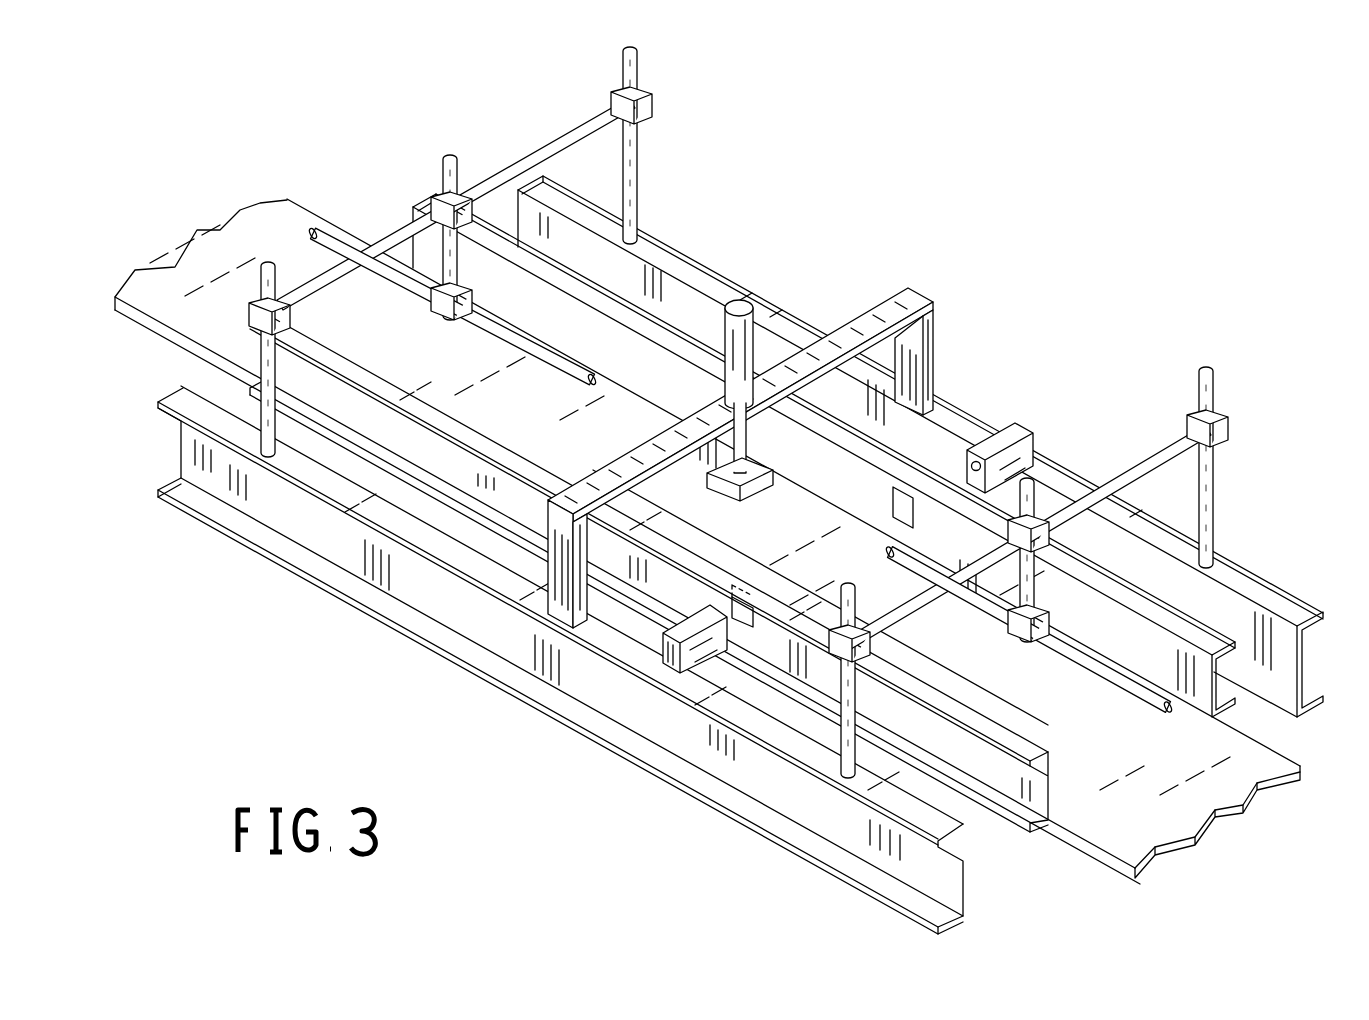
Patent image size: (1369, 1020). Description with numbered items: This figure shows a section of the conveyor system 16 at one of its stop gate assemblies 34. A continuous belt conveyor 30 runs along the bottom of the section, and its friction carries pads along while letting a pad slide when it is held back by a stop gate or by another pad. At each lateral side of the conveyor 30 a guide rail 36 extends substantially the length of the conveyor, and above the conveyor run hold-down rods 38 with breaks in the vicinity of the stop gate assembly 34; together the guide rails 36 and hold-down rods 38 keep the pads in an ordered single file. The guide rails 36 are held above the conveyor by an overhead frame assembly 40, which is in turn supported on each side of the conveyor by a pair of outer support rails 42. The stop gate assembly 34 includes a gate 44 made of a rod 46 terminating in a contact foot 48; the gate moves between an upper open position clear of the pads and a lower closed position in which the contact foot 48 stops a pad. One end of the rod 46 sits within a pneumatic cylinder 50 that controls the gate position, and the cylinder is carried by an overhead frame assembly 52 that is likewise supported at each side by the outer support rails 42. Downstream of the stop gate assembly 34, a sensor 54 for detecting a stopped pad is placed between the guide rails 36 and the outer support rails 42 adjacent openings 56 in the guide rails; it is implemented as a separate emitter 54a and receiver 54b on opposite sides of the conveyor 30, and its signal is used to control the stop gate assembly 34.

The conveyor system 16 is at (773, 205).
The continuous belt conveyor 30 is at (1190, 807).
The stop gate assembly 34 is at (936, 284).
The guide rail 36 is at (1173, 620).
The hold-down rod 38 is at (315, 232).
The overhead frame assembly 40 is at (1150, 453).
The outer support rail 42 is at (1278, 598).
The gate 44 is at (716, 496).
The rod 46 is at (746, 432).
The contact foot 48 is at (757, 487).
The pneumatic cylinder 50 is at (747, 337).
The overhead frame assembly 52 is at (927, 350).
The sensor 54 is at (1032, 418).
The emitter 54a is at (1027, 450).
The receiver 54b is at (663, 642).
The opening 56 is at (918, 503).